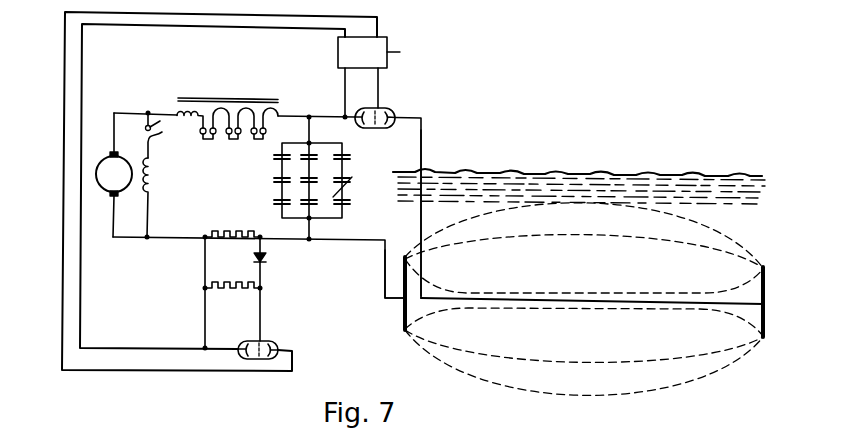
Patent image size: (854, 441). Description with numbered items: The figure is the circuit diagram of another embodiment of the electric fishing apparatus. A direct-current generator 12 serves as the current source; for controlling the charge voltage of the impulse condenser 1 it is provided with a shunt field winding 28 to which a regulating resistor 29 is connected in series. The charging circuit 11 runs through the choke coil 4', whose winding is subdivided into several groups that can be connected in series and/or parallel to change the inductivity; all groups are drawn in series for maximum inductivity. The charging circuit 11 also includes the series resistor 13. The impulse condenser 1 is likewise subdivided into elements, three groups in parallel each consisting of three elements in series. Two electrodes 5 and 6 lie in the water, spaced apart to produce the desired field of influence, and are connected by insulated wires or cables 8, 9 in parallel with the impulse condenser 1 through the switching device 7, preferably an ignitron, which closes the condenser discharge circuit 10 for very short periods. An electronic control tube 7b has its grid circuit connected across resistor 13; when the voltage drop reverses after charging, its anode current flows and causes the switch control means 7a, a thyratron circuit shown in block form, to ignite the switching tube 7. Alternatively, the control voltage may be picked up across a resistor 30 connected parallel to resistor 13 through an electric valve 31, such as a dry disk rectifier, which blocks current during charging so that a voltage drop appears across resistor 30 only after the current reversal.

The direct-current generator 12 is at (98, 175).
The regulating resistor 29 is at (159, 120).
The shunt field winding 28 is at (152, 178).
The choke coil 4' is at (227, 106).
The charging circuit 11 is at (237, 186).
The series resistor 13 is at (236, 230).
The resistor 30 is at (226, 290).
The electric valve 31 is at (270, 257).
The impulse condenser 1 is at (365, 192).
The switch control means 7a is at (342, 52).
The switching device 7 is at (383, 110).
The electronic control tube 7b is at (263, 343).
The condenser discharge circuit 10 is at (411, 240).
The insulated wire or cable 8 is at (384, 272).
The electrode 5 is at (403, 315).
The electrode 6 is at (764, 283).
The insulated wire or cable 9 is at (580, 298).